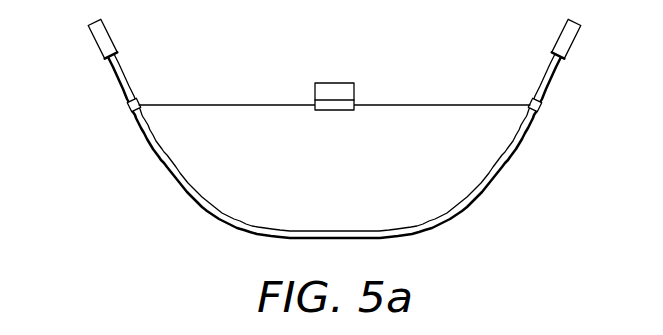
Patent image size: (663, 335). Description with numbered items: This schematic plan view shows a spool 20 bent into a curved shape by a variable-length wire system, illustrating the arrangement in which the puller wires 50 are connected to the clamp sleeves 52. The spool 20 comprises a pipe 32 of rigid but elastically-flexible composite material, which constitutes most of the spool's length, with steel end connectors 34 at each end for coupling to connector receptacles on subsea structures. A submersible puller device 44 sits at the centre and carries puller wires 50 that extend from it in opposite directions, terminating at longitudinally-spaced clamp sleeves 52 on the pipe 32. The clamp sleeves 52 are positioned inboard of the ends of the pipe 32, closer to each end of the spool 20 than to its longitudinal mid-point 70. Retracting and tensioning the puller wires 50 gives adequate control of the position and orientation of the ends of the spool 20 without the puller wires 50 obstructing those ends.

The spool 20 is at (334, 134).
The pipe 32 is at (478, 198).
The end connectors 34 is at (97, 42).
The puller device 44 is at (331, 82).
The puller wires 50 is at (240, 103).
The clamp sleeves 52 is at (127, 108).
The longitudinal mid-point 70 is at (331, 230).